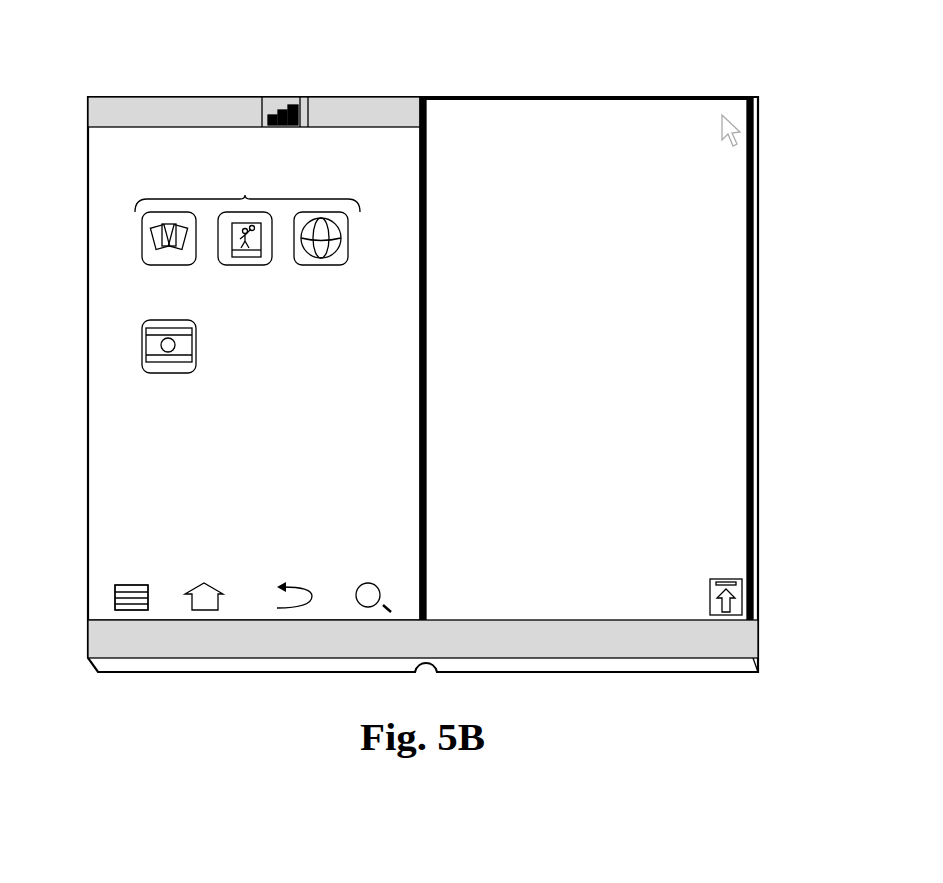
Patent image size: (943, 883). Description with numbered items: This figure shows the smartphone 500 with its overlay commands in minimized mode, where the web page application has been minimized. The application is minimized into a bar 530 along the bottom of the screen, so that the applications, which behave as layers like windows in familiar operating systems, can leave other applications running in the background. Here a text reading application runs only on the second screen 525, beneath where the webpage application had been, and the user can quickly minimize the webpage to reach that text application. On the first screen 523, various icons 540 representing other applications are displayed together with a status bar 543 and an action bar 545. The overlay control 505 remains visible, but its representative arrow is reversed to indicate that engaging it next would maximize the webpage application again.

The smartphone 500 is at (756, 62).
The overlay control 505 is at (741, 580).
The first screen 523 is at (113, 490).
The second screen 525 is at (742, 226).
The bar 530 is at (743, 633).
The icons 540 is at (245, 195).
The status bar 543 is at (325, 110).
The action bar 545 is at (117, 597).